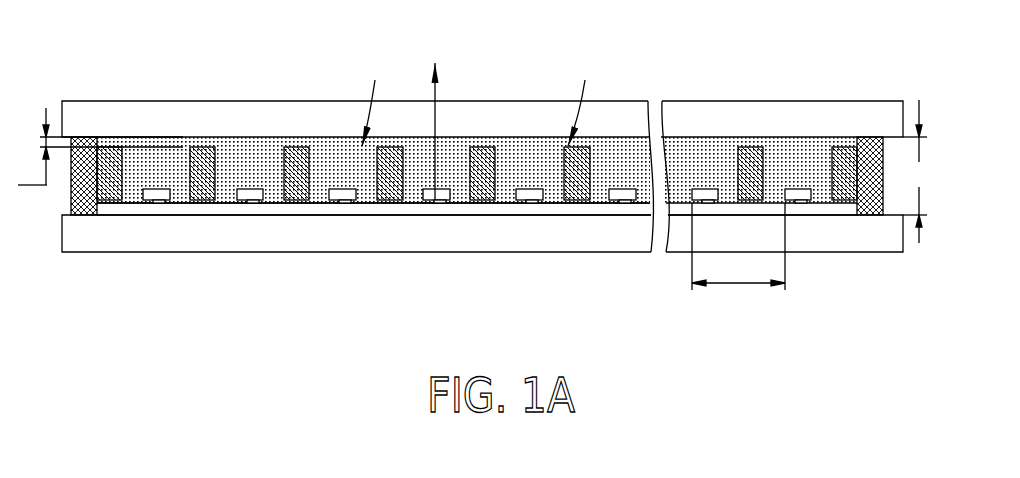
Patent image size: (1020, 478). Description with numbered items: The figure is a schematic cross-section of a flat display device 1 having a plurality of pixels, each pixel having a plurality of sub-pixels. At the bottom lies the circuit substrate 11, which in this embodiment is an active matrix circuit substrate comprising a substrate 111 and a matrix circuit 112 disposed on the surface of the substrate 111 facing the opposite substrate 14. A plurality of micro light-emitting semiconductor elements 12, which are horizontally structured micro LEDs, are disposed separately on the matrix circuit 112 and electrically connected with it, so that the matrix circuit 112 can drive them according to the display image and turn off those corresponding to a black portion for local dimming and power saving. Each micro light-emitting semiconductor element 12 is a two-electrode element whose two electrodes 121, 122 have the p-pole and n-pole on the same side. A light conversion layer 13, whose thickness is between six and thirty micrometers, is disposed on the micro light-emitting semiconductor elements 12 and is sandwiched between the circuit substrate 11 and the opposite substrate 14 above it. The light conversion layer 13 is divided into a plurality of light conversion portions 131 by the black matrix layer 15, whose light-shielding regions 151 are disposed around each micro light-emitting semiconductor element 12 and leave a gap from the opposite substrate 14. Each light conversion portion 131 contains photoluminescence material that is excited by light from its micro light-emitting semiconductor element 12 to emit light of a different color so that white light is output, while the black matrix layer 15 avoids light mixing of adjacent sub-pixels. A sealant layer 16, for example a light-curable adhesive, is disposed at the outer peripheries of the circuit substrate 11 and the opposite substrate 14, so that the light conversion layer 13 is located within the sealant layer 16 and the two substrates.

The display device 1 is at (177, 55).
The circuit substrate 11 is at (463, 300).
The substrate 111 is at (387, 230).
The matrix circuit 112 is at (436, 212).
The micro light-emitting semiconductor element 12 is at (252, 203).
The electrode 121 is at (150, 203).
The electrode 122 is at (158, 203).
The light conversion layer 13 is at (343, 126).
The light conversion portion 131 is at (269, 148).
The opposite substrate 14 is at (510, 113).
The black matrix layer 15 is at (789, 131).
The light-shielding region 151 is at (748, 148).
The sealant layer 16 is at (85, 215).